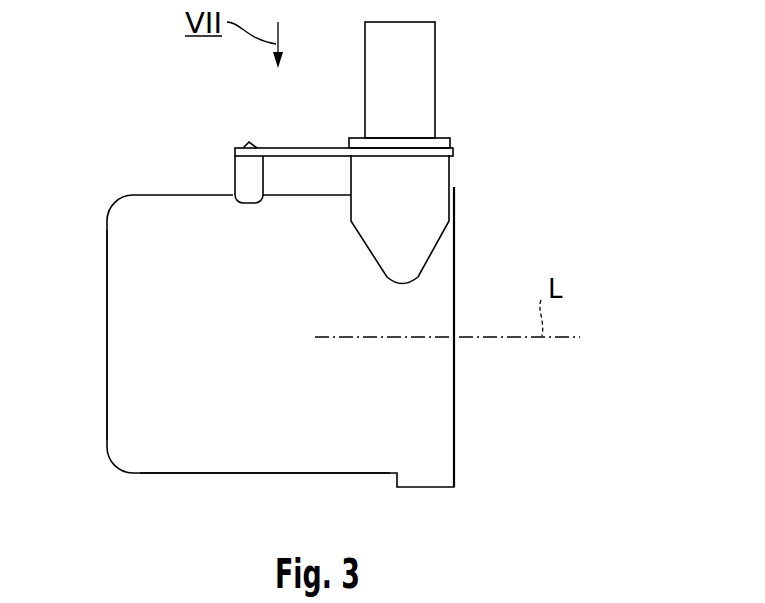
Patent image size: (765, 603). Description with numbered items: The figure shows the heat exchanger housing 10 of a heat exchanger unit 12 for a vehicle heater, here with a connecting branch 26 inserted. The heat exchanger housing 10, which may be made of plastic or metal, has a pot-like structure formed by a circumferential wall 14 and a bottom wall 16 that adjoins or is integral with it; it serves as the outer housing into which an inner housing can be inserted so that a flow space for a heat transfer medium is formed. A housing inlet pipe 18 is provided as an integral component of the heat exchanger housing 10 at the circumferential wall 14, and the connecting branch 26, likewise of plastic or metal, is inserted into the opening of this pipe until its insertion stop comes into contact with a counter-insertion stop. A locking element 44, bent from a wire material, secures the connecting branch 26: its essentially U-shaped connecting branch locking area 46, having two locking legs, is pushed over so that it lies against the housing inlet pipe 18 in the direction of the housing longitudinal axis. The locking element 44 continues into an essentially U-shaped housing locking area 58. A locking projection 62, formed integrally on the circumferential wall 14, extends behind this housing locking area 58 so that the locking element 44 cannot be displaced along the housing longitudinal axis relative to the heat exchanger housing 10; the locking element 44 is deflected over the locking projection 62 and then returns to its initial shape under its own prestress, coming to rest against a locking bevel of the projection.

The heat exchanger housing 10 is at (455, 373).
The heat exchanger unit 12 is at (585, 110).
The circumferential wall 14 is at (197, 476).
The bottom wall 16 is at (107, 333).
The housing inlet pipe 18 is at (428, 183).
The connecting branch 26 is at (440, 47).
The locking element 44 is at (278, 148).
The connecting branch locking area 46 is at (455, 152).
The housing locking area 58 is at (246, 146).
The locking projection 62 is at (233, 172).